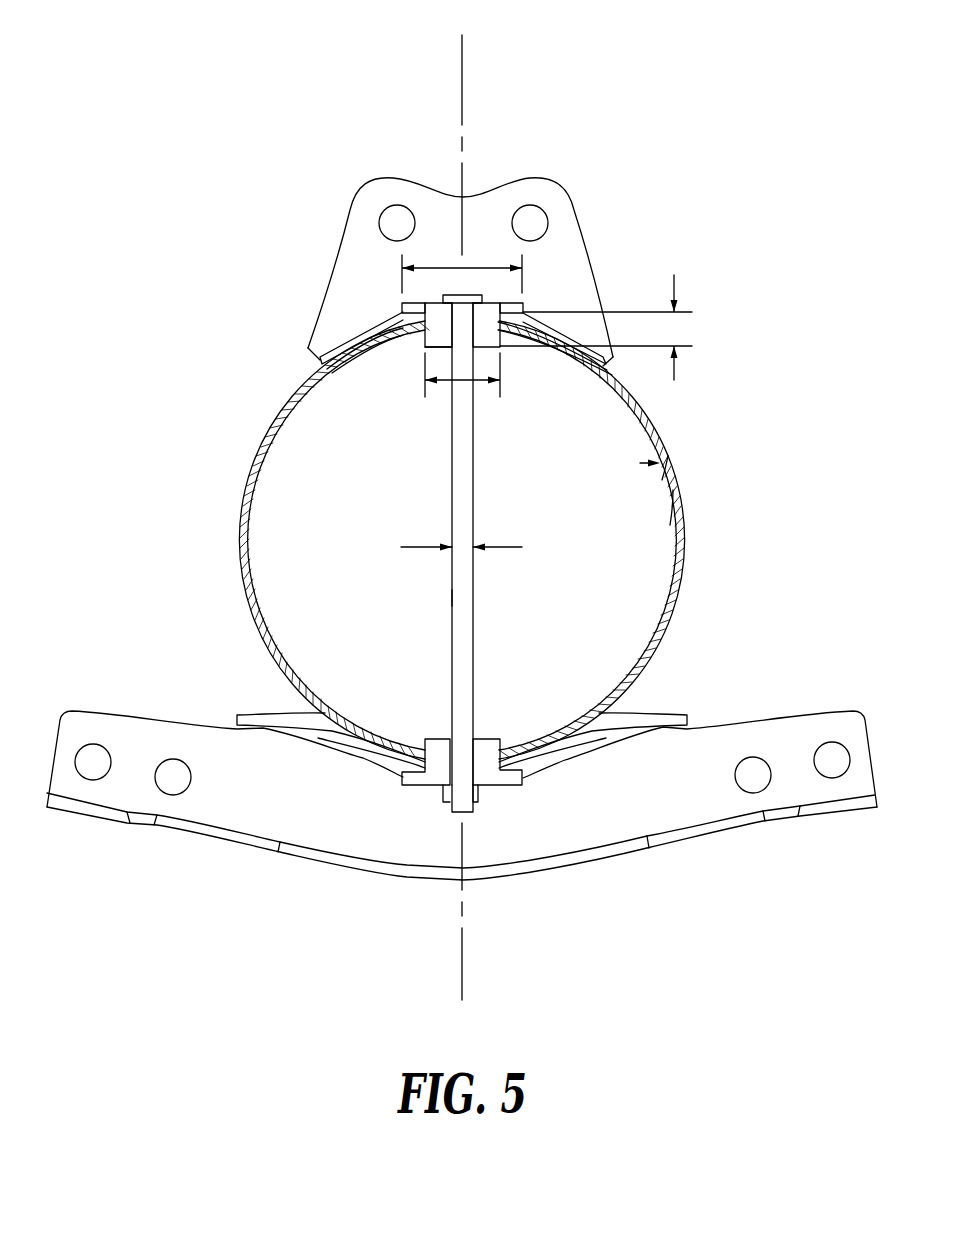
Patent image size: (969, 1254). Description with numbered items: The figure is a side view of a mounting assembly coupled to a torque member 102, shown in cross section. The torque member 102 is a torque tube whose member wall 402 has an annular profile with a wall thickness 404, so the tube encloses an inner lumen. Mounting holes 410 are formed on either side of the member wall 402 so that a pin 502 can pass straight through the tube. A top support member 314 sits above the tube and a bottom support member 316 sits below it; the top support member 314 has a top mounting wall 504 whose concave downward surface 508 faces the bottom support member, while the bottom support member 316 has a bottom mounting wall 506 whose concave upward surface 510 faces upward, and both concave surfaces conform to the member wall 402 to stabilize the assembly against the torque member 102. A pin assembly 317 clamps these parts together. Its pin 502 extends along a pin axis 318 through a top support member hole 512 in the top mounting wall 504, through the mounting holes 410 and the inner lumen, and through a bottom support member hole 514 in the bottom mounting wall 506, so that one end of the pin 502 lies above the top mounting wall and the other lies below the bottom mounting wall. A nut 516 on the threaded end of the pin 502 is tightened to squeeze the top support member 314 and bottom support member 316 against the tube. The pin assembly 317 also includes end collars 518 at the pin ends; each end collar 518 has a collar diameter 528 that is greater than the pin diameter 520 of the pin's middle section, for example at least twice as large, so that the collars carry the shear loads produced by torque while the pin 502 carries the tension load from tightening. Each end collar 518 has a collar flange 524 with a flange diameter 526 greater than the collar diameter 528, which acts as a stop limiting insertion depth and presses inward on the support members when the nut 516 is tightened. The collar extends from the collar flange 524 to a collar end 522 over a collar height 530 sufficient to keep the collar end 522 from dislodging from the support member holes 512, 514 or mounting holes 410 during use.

The torque member 102 is at (689, 572).
The top support member 314 is at (548, 172).
The bottom support member 316 is at (747, 725).
The pin assembly 317 is at (452, 598).
The pin axis 318 is at (462, 82).
The member wall 402 is at (681, 508).
The wall thickness 404 is at (670, 457).
The mounting holes 410 is at (427, 303).
The pin 502 is at (473, 627).
The top mounting wall 504 is at (393, 313).
The bottom mounting wall 506 is at (660, 712).
The concave downward surface 508 is at (390, 323).
The concave upward surface 510 is at (440, 738).
The top support member hole 512 is at (524, 302).
The bottom support member hole 514 is at (445, 788).
The nut 516 is at (478, 788).
The end collar 518 is at (500, 347).
The pin diameter 520 is at (522, 547).
The collar end 522 is at (424, 348).
The collar flange 524 is at (537, 316).
The flange diameter 526 is at (470, 295).
The collar diameter 528 is at (443, 383).
The collar height 530 is at (674, 275).